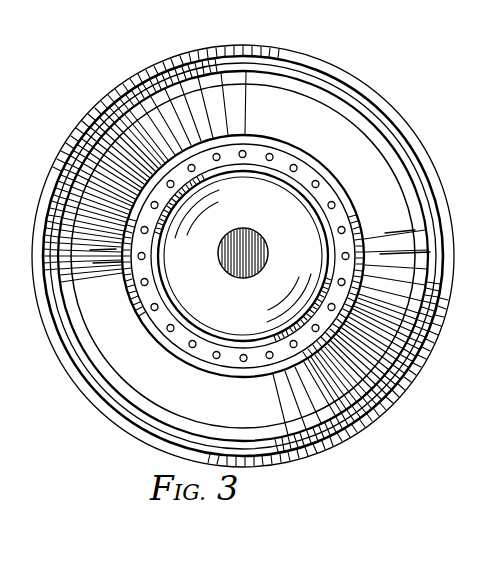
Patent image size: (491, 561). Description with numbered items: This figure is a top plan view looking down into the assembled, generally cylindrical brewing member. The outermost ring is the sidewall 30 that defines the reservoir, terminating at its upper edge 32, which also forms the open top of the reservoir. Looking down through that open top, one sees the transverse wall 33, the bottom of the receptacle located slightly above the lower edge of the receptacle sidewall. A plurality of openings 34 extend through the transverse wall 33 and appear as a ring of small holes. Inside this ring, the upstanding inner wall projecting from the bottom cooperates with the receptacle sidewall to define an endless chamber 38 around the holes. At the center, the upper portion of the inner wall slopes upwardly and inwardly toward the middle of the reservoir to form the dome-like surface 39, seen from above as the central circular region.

The sidewall 30 is at (362, 127).
The upper edge 32 is at (416, 185).
The transverse wall 33 is at (147, 293).
The openings 34 is at (244, 150).
The endless chamber 38 is at (300, 175).
The dome-like surface 39 is at (293, 227).